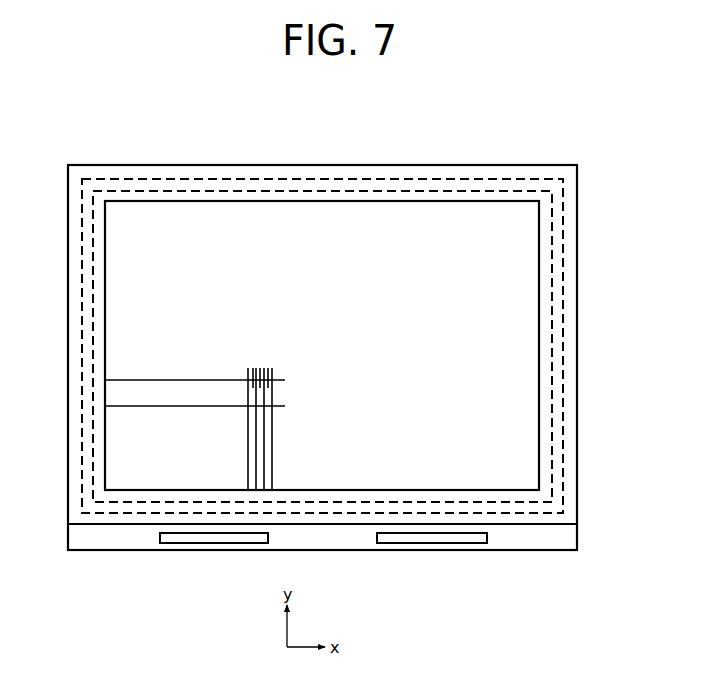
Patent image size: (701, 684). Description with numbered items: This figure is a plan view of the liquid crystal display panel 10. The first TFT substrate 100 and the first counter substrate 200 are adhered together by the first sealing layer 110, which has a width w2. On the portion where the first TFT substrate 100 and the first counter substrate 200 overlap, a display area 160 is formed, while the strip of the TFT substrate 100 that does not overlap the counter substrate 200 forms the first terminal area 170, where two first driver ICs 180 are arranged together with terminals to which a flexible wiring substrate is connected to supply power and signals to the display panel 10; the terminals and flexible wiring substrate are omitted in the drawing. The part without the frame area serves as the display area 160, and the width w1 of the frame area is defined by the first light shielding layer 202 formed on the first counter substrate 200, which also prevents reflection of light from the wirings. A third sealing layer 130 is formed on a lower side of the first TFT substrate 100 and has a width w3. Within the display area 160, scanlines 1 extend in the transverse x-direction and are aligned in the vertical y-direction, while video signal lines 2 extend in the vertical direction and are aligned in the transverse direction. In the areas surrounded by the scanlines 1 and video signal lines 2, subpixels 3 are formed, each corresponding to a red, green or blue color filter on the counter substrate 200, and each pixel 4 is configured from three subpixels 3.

The display panel 10 is at (67, 134).
The first TFT substrate 100 is at (447, 233).
The first sealing layer 110 is at (570, 270).
The third sealing layer 130 is at (555, 303).
The display area 160 is at (393, 341).
The first terminal area 170 is at (507, 538).
The first driver IC 180 is at (422, 543).
The first counter substrate 200 is at (577, 382).
The first light shielding layer 202 is at (538, 338).
The scanline 1 is at (156, 380).
The video signal line 2 is at (272, 450).
The subpixel 3 is at (253, 368).
The pixel 4 is at (295, 323).
The width of the frame area w1 is at (135, 256).
The width of the first sealing layer w2 is at (115, 320).
The width of the third sealing layer w3 is at (127, 289).